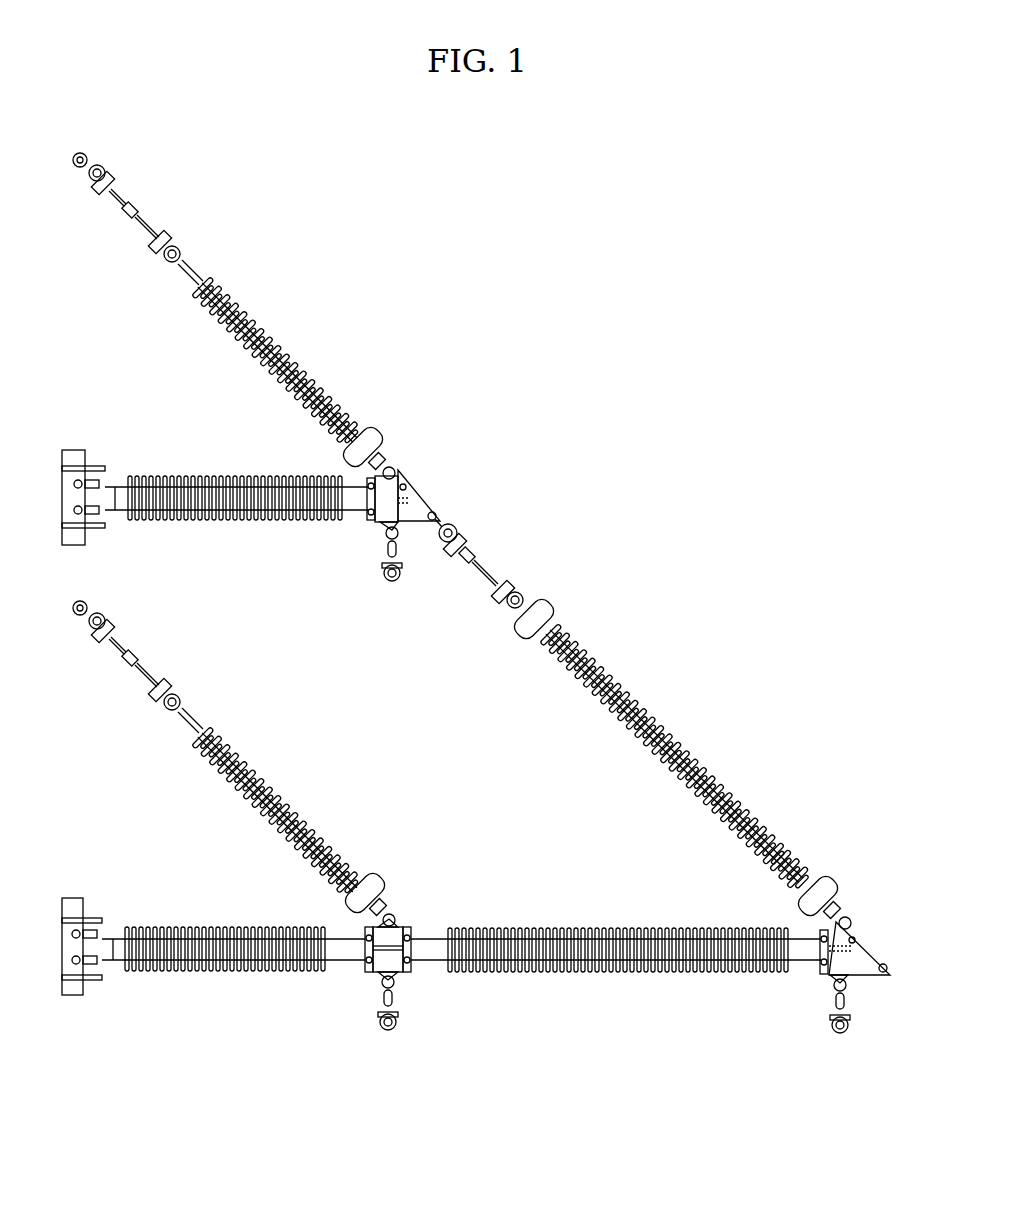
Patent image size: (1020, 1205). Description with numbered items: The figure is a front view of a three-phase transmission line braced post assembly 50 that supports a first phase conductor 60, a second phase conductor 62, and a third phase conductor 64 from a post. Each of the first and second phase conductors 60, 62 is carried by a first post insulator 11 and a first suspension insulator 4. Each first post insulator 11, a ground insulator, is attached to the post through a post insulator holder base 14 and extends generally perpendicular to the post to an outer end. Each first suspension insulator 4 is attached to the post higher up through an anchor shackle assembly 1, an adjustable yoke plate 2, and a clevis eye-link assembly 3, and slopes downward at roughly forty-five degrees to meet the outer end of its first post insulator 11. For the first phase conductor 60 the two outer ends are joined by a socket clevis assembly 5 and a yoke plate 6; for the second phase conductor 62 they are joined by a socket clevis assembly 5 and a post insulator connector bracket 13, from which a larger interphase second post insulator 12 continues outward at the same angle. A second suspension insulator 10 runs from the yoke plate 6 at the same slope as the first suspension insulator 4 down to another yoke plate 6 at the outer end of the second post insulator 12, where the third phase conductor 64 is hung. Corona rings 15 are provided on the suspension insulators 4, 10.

The anchor shackle assembly 1 is at (95, 165).
The adjustable yoke plate 2 is at (118, 193).
The clevis eye-link assembly 3 is at (140, 225).
The first suspension insulator 4 is at (247, 322).
The socket clevis assembly 5 is at (392, 462).
The yoke plate 6 is at (418, 496).
The second suspension insulator 10 is at (617, 695).
The first post insulator 11 is at (275, 478).
The second post insulator 12 is at (595, 990).
The post insulator connector bracket 13 is at (395, 918).
The post insulator holder base 14 is at (88, 532).
The corona ring 15 is at (372, 440).
The three-phase transmission line braced post assembly 50 is at (578, 340).
The first phase conductor 60 is at (369, 573).
The second phase conductor 62 is at (372, 1021).
The third phase conductor 64 is at (796, 1022).